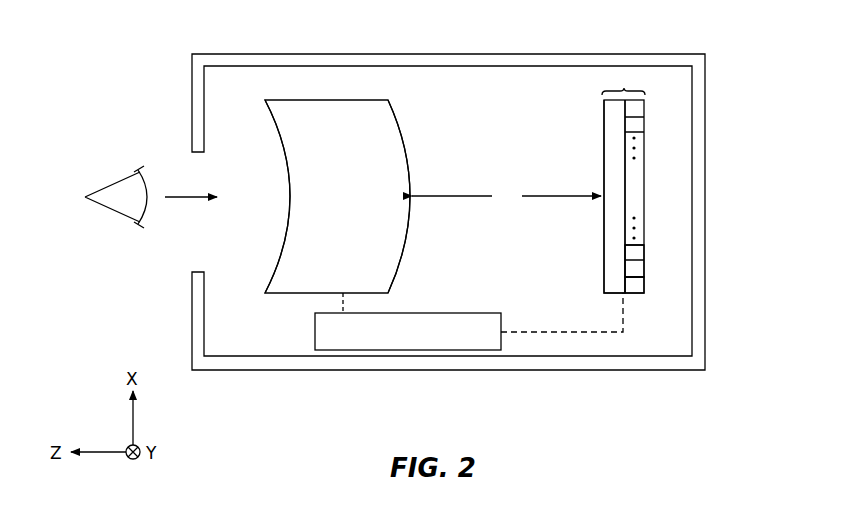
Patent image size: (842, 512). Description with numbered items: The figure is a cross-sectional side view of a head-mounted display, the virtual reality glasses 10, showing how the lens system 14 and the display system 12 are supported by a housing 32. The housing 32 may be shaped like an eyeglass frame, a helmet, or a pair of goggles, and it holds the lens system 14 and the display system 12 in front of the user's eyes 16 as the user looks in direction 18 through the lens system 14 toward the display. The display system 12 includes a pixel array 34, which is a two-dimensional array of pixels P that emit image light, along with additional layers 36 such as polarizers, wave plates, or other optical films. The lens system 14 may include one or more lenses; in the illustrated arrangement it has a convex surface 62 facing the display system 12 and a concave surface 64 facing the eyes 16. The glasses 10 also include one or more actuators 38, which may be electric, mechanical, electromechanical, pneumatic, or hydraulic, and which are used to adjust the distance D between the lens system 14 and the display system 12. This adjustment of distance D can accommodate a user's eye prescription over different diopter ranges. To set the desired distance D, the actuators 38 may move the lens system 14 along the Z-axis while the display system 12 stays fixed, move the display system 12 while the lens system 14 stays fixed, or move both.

The virtual reality glasses 10 is at (488, 187).
The housing 32 is at (510, 62).
The lens system 14 is at (344, 153).
The convex surface 62 is at (406, 137).
The concave surface 64 is at (288, 243).
The display system 12 is at (626, 88).
The additional layers 36 is at (612, 280).
The pixel array 34 is at (634, 284).
The pixels P is at (633, 252).
The distance D is at (506, 196).
The actuators 38 is at (337, 350).
The user's eyes 16 is at (114, 185).
The direction 18 is at (188, 197).